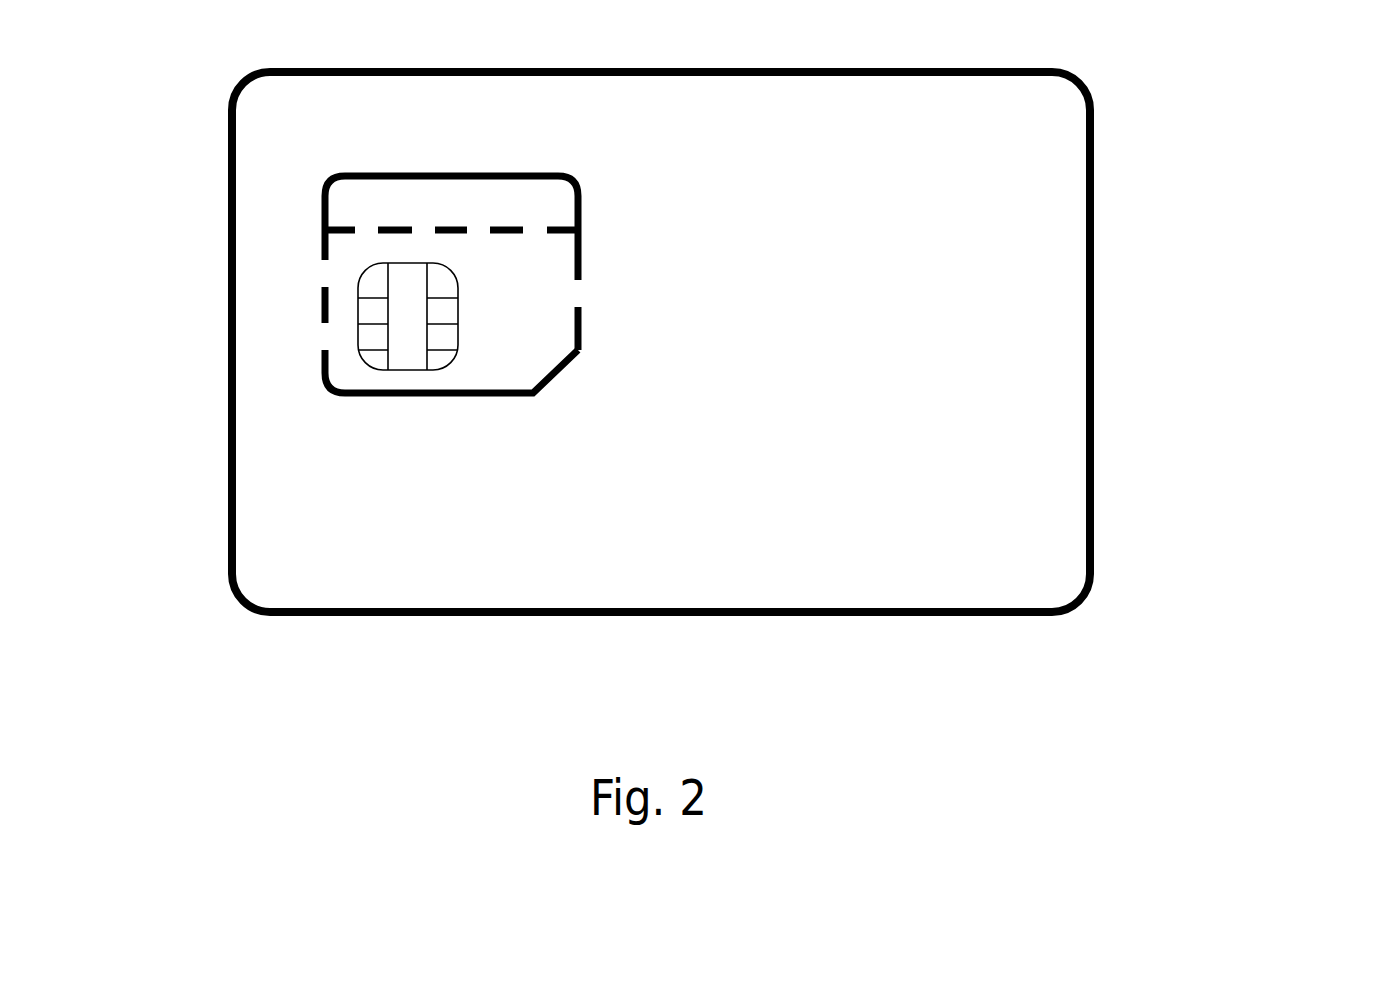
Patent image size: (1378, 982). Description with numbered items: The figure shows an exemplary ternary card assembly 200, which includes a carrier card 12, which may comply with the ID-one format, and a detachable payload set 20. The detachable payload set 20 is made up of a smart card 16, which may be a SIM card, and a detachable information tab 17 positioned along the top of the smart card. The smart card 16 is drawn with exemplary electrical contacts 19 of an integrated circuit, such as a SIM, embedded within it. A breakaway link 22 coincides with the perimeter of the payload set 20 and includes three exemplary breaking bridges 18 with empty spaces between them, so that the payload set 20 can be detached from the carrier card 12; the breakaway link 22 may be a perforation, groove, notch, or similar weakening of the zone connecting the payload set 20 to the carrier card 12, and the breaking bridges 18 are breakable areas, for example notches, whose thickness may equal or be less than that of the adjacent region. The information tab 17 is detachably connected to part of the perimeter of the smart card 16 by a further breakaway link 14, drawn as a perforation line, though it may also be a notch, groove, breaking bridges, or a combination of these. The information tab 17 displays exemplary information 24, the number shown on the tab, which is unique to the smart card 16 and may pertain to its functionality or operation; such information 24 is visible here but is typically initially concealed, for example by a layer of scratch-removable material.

The ternary card assembly 200 is at (1199, 684).
The carrier card 12 is at (1042, 283).
The detachable payload set 20 is at (736, 451).
The breakaway link 14 is at (510, 240).
The smart card 16 is at (520, 355).
The information tab 17 is at (423, 190).
The breaking bridges 18 is at (323, 272).
The electrical contacts 19 is at (405, 358).
The breakaway link 22 is at (328, 390).
The information 24 is at (563, 203).